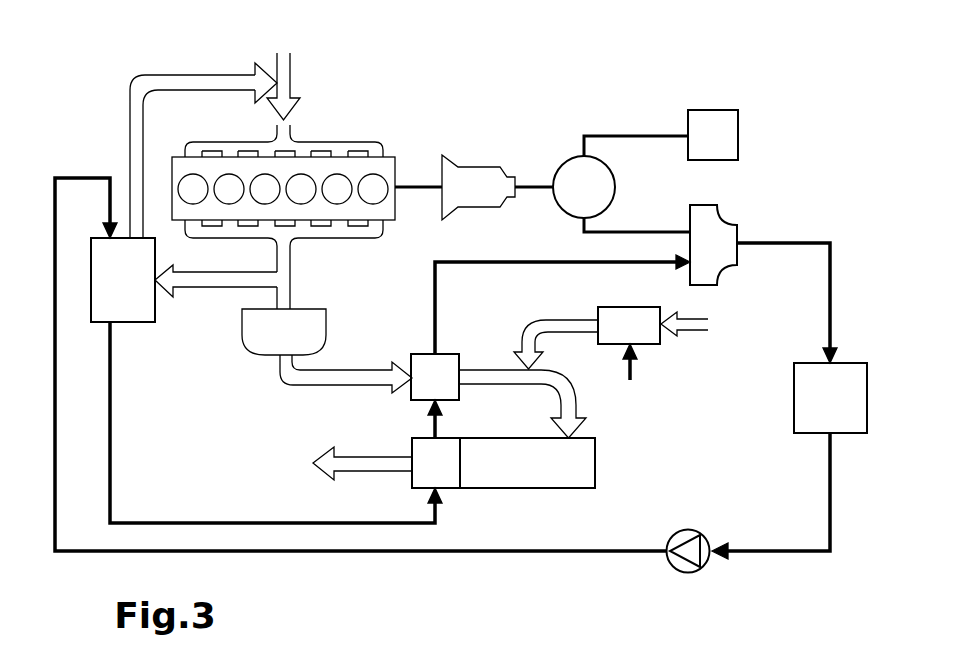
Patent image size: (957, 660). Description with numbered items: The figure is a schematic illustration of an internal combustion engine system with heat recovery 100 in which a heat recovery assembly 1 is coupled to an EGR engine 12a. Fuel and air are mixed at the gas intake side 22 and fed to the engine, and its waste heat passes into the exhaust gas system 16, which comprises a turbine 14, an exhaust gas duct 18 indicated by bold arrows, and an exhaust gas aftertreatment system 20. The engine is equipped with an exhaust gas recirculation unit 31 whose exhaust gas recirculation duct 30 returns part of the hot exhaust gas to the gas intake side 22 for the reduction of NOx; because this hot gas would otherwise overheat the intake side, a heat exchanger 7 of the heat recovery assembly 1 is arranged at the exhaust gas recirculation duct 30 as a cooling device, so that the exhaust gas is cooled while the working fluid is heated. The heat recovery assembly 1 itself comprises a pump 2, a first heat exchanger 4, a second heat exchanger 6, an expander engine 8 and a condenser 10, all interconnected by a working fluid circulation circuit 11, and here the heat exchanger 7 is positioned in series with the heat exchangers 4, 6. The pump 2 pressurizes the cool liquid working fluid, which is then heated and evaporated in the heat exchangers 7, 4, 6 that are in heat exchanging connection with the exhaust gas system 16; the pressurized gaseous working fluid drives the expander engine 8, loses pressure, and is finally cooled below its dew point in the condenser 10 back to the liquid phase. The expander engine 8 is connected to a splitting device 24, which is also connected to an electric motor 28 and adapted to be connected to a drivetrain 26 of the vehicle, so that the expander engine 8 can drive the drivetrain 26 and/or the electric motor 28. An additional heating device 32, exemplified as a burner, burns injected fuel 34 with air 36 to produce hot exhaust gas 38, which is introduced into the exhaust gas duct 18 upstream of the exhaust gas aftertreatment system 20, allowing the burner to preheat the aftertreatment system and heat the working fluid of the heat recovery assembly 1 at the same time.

The internal combustion engine system with heat recovery 100 is at (496, 53).
The heat recovery assembly 1 is at (801, 213).
The pump 2 is at (688, 530).
The first heat exchanger 4 is at (386, 463).
The second heat exchanger 6 is at (369, 377).
The heat exchanger 7 is at (123, 280).
The expander engine 8 is at (713, 245).
The condenser 10 is at (830, 398).
The working fluid circulation circuit 11 is at (832, 456).
The EGR engine 12a is at (396, 160).
The turbine 14 is at (284, 332).
The exhaust gas system 16 is at (316, 282).
The exhaust gas duct 18 is at (543, 385).
The exhaust gas aftertreatment system 20 is at (527, 463).
The gas intake side 22 is at (283, 74).
The splitting device 24 is at (584, 187).
The drivetrain 26 is at (497, 187).
The electric motor 28 is at (713, 135).
The exhaust gas recirculation duct 30 is at (228, 288).
The exhaust gas recirculation unit 31 is at (124, 78).
The additional heating device 32 is at (629, 325).
The injected fuel 34 is at (630, 376).
The air 36 is at (699, 324).
The hot exhaust gas 38 is at (534, 312).